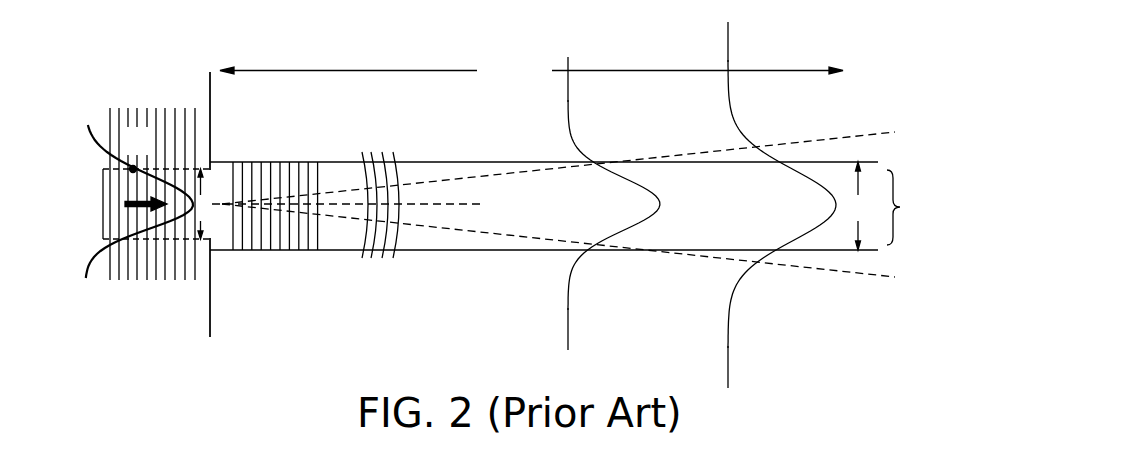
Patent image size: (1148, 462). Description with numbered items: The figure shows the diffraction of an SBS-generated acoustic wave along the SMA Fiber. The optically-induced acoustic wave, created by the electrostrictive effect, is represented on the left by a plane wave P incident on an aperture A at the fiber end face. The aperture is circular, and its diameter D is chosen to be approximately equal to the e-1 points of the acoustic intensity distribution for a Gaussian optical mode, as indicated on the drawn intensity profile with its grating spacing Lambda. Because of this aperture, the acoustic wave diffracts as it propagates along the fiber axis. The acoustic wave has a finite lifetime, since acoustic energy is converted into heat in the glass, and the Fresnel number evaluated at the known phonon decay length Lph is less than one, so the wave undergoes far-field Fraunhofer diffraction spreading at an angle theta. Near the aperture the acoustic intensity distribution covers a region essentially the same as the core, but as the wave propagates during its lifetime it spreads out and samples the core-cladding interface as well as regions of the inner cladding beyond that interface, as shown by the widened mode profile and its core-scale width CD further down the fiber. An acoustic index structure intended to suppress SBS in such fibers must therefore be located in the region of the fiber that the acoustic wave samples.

The plane wave P is at (109, 266).
The 1/e intensity point e-1 is at (137, 151).
The grating period 0.037 um Lambda is at (128, 304).
The SMA fiber SMA Fiber is at (544, 212).
The element cladding is at (544, 189).
The aperture A is at (203, 176).
The aperture diameter D is at (206, 204).
The element core is at (378, 209).
The divergence angle of rays theta is at (350, 194).
The phonon decay length Lph is at (531, 76).
The core diameter at output CD is at (899, 206).